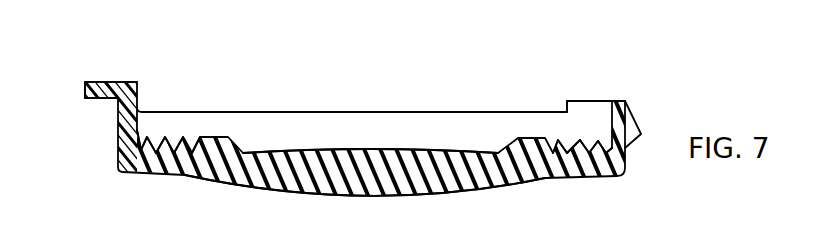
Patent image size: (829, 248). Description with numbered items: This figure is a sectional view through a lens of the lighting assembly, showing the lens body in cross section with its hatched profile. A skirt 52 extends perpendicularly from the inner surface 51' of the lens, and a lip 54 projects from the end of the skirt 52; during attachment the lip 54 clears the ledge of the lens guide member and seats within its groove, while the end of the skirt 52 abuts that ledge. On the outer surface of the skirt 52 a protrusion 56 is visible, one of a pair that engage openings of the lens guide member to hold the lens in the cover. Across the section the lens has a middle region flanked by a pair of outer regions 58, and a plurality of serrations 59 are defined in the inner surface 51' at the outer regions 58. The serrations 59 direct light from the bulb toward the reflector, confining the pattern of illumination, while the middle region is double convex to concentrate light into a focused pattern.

The inner surface 51' is at (387, 121).
The skirt 52 is at (117, 128).
The lip 54 is at (84, 90).
The protrusions 56 is at (636, 133).
The outer regions 58 is at (142, 128).
The serrations 59 is at (166, 150).